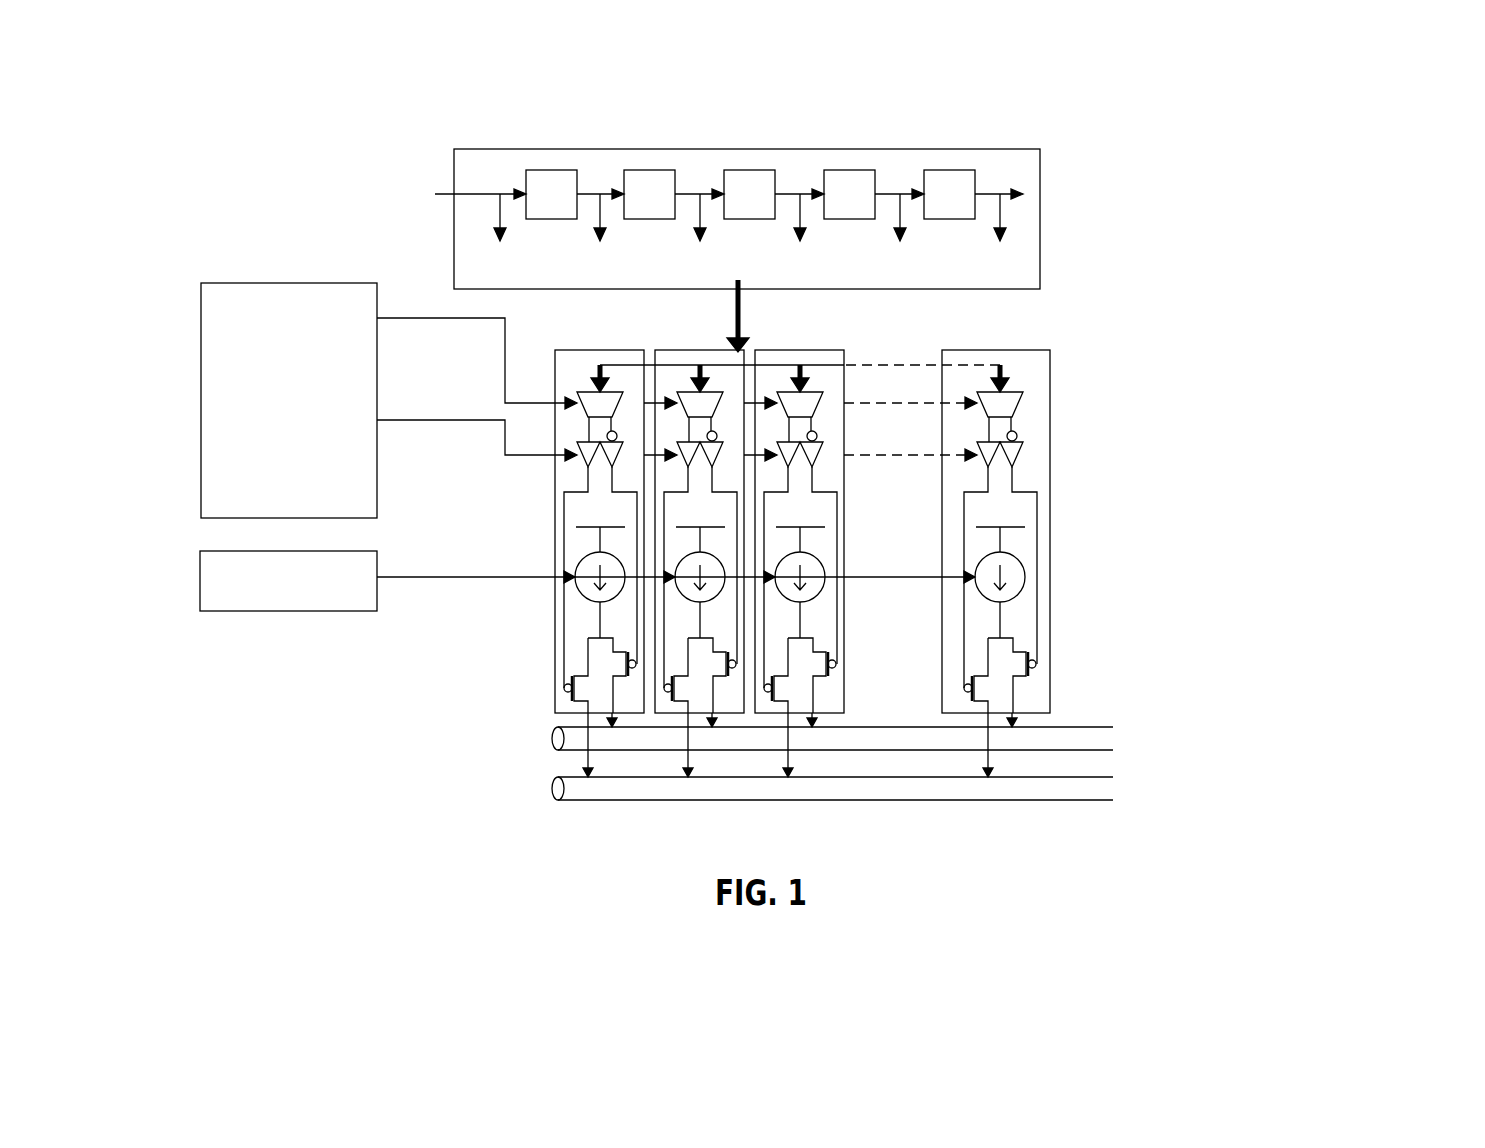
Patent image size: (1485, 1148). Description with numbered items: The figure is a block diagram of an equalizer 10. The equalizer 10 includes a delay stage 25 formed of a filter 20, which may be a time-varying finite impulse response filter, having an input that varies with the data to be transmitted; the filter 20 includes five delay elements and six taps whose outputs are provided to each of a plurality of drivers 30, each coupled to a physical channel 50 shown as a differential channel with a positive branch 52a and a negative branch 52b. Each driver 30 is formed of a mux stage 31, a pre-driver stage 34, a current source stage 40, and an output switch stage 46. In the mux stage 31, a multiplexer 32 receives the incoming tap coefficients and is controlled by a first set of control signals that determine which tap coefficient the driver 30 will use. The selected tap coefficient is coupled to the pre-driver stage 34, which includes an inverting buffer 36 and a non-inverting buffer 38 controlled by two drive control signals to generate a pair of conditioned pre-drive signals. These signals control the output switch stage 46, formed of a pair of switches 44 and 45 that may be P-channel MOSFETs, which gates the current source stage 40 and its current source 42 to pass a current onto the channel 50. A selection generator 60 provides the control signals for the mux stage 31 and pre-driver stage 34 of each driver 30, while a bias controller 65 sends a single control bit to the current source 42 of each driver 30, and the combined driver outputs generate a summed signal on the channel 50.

The equalizer 10 is at (510, 117).
The filter 20 is at (748, 148).
The delay stage 25 is at (1138, 227).
The driver 30 is at (605, 350).
The mux stage 31 is at (1138, 367).
The multiplexer 32 is at (1010, 392).
The pre-driver stage 34 is at (1138, 437).
The inverting buffer 36 is at (1023, 445).
The non-inverting buffer 38 is at (988, 465).
The current source stage 40 is at (1138, 545).
The current source 42 is at (1020, 570).
The switch 44 is at (1037, 661).
The switch 45 is at (963, 686).
The output switch stage 46 is at (1138, 627).
The channel 50 is at (1148, 725).
The positive branch 52a is at (550, 730).
The negative branch 52b is at (550, 780).
The selection generator 60 is at (201, 328).
The bias controller 65 is at (200, 578).